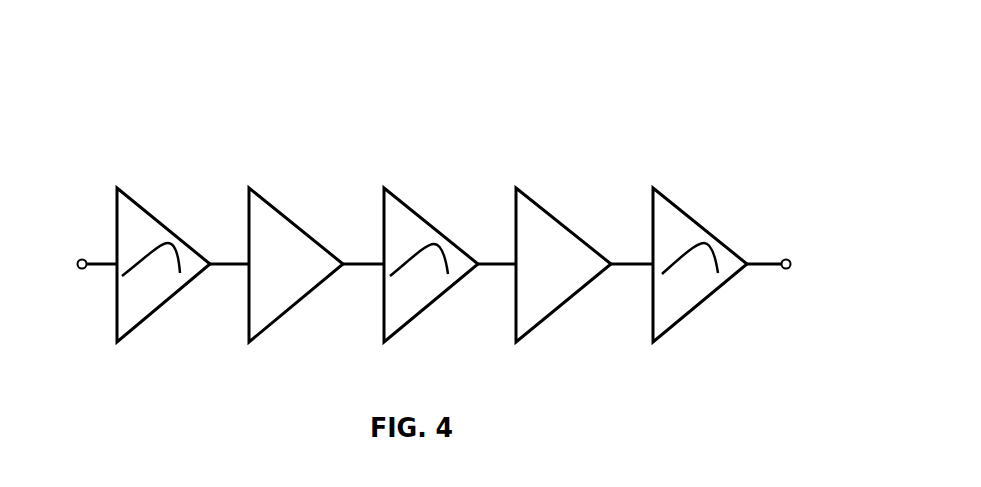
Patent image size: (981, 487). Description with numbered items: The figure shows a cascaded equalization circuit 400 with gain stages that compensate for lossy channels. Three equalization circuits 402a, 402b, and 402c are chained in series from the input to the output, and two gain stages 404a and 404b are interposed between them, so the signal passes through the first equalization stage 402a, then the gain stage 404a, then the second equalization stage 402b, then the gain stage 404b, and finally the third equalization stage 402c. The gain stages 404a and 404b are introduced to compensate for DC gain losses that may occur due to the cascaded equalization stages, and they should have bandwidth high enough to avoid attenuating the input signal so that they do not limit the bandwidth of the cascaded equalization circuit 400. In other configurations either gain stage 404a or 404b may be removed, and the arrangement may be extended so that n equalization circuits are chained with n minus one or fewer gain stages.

The cascaded equalization circuit 400 is at (614, 95).
The equalization stage 402a is at (159, 206).
The gain stage 404a is at (293, 206).
The equalization stage 402b is at (422, 206).
The gain stage 404b is at (555, 206).
The equalization stage 402c is at (683, 201).